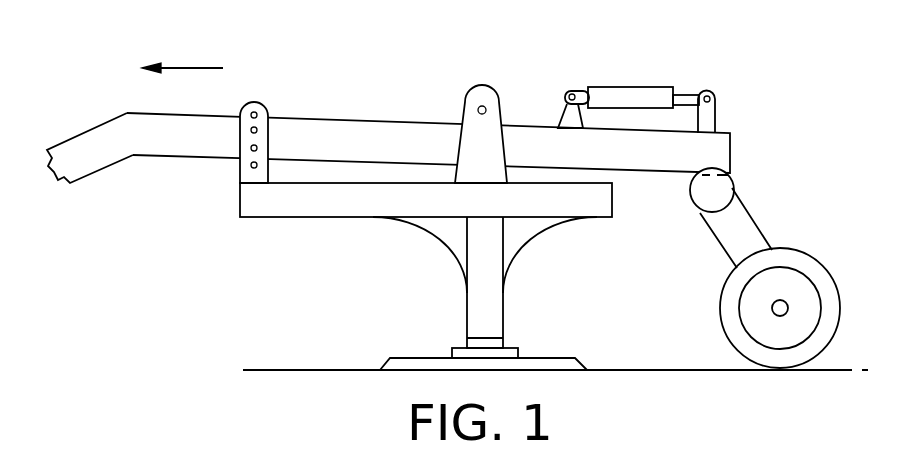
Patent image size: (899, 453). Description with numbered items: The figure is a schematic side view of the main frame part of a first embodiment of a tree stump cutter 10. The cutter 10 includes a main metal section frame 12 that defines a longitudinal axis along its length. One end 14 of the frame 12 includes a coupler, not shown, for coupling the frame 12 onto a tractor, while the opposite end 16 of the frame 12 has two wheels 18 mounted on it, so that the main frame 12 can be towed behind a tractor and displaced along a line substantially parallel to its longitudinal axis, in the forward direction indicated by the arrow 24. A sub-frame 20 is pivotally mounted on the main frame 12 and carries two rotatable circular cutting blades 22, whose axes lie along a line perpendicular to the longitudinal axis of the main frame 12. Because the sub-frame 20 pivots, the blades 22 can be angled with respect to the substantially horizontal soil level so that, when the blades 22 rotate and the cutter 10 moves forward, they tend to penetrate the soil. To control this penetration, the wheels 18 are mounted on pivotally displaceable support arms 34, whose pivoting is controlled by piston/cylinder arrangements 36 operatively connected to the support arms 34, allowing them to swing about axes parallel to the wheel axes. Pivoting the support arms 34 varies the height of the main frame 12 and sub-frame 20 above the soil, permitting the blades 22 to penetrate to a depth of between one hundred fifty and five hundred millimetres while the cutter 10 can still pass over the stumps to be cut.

The tree stump cutter 10 is at (509, 51).
The main metal section frame 12 is at (370, 137).
The one end of the frame 14 is at (73, 125).
The opposite end of the frame 16 is at (742, 155).
The wheels 18 is at (833, 307).
The sub-frame 20 is at (350, 205).
The circular cutting blades 22 is at (575, 360).
The arrow 24 is at (175, 68).
The support arms 34 is at (773, 207).
The piston/cylinder arrangements 36 is at (628, 87).